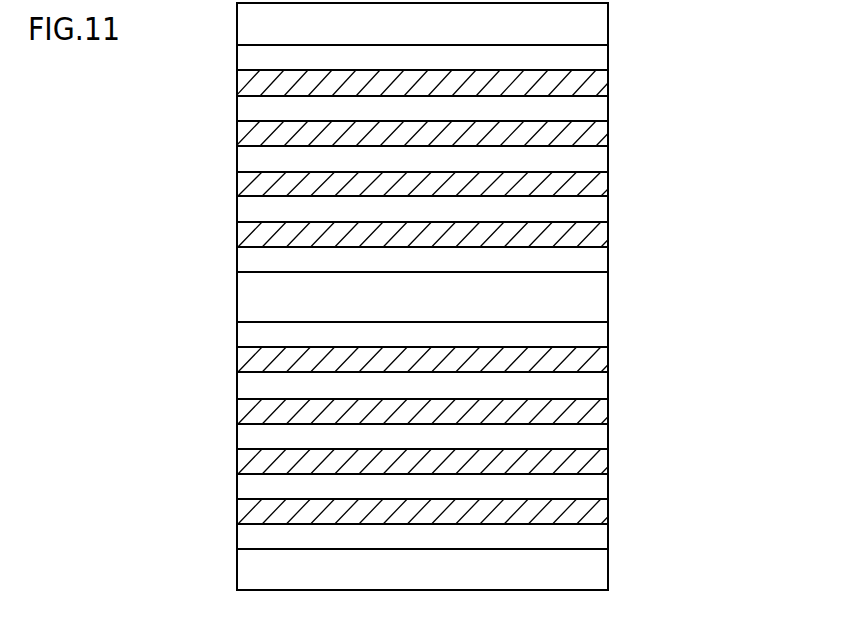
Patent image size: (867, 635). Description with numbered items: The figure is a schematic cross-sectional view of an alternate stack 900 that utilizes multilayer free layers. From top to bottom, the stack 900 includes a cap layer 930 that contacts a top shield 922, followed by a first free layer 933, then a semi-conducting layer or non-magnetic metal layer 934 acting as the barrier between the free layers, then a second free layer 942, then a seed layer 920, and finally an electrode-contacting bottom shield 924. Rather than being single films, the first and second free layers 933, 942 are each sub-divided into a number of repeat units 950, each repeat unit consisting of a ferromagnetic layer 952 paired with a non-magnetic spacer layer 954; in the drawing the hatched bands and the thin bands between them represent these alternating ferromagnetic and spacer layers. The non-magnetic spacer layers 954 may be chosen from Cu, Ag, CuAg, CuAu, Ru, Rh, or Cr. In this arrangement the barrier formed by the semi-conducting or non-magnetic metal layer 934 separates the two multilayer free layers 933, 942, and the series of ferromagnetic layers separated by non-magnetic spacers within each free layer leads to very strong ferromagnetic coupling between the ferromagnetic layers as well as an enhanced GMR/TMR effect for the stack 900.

The stack 900 is at (716, 212).
The top shield 922 is at (247, 23).
The cap layer 930 is at (247, 57).
The first free layer 933 is at (422, 156).
The semi-conducting layer or non-magnetic metal layer 934 is at (247, 295).
The second free layer 942 is at (210, 322).
The seed layer 920 is at (247, 537).
The bottom shield 924 is at (247, 577).
The repeat unit 950 is at (461, 96).
The ferromagnetic layer 952 is at (603, 108).
The non-magnetic spacer layer 954 is at (603, 83).